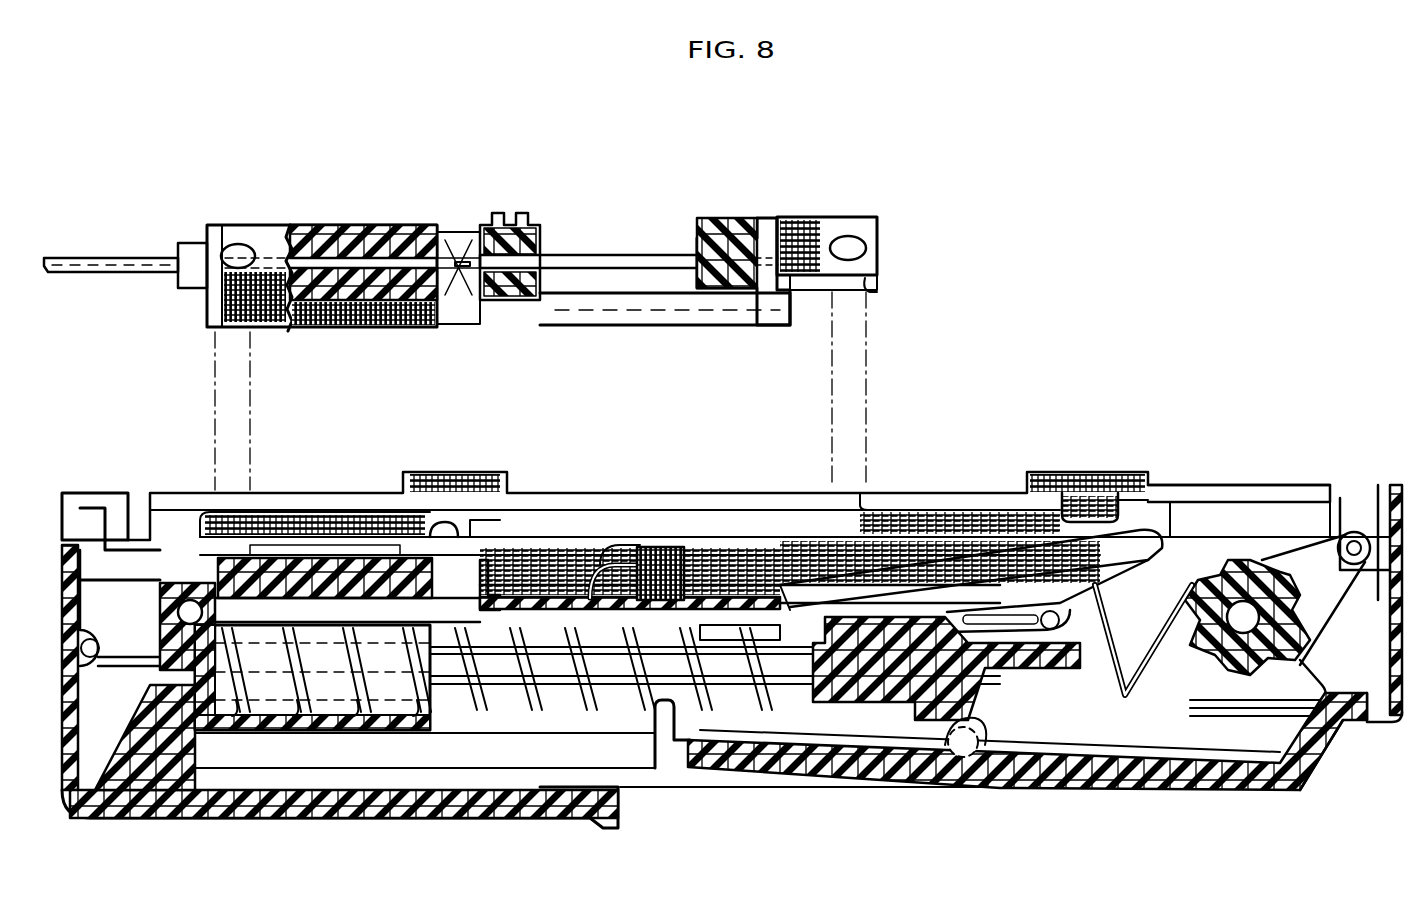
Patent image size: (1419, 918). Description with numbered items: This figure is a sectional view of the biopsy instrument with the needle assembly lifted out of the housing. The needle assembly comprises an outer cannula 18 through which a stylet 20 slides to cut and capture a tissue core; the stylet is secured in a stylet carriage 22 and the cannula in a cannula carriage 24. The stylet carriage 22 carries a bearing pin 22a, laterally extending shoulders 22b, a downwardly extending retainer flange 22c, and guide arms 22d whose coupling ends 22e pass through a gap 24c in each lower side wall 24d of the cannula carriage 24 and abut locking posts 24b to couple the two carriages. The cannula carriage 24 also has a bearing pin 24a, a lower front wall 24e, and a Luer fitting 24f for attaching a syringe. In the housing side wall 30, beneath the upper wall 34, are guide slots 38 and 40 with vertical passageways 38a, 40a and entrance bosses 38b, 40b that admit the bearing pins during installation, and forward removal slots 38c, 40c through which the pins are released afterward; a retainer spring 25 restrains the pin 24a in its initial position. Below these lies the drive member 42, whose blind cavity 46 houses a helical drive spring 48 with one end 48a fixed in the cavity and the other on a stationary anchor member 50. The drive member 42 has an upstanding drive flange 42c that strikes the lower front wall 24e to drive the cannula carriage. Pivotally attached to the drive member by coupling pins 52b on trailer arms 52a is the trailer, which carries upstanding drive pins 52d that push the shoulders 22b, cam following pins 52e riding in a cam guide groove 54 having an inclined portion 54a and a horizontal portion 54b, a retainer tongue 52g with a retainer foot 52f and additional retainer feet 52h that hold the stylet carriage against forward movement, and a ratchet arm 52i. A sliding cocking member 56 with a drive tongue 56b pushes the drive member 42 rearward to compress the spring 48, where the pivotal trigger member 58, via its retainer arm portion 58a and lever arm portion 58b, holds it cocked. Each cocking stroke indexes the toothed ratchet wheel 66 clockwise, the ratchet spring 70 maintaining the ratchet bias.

The outer cannula 18 is at (76, 256).
The stylet 20 is at (583, 254).
The stylet carriage 22 is at (785, 220).
The bearing pin 22a is at (855, 240).
The shoulders 22b is at (813, 228).
The retainer flange 22c is at (876, 292).
The stylet carriage guide arms 22d is at (645, 296).
The coupling ends 22e is at (482, 245).
The cannula carriage 24 is at (306, 222).
The bearing pin 24a is at (232, 246).
The locking posts 24b is at (470, 330).
The gap 24c is at (442, 280).
The lower side walls 24d is at (362, 300).
The lower front wall 24e is at (207, 302).
The Luer fitting 24f is at (512, 298).
The retainer spring 25 is at (360, 540).
The housing side wall 30 is at (1243, 465).
The upper wall 34 is at (1212, 492).
The guide slot 38 is at (1022, 505).
The vertical passageway 38a is at (1125, 500).
The entrance boss 38b is at (1110, 500).
The forward removal slot 38c is at (870, 500).
The guide slot 40 is at (330, 510).
The vertical passageway 40a is at (455, 493).
The entrance boss 40b is at (460, 515).
The forward removal slot 40c is at (238, 510).
The drive member 42 is at (150, 600).
The drive flange 42c is at (228, 560).
The blind cavity 46 is at (400, 735).
The helical drive spring 48 is at (345, 735).
The spring end 48a is at (255, 735).
The stationary anchor member 50 is at (865, 705).
The trailer arms 52a is at (492, 590).
The coupling pin 52b is at (185, 600).
The drive pins 52d is at (680, 600).
The cam following pin 52e is at (660, 545).
The retainer foot 52f is at (612, 570).
The retainer tongue 52g is at (555, 690).
The additional retainer feet 52h is at (555, 600).
The ratchet arm 52i is at (742, 600).
The cam guide groove 54 is at (940, 570).
The inclined portion 54a is at (1010, 610).
The horizontal portion 54b is at (800, 590).
The cocking member 56 is at (478, 800).
The drive tongue 56b is at (182, 740).
The trigger member 58 is at (980, 748).
The retainer arm portion 58a is at (665, 768).
The trigger lever arm portion 58b is at (1332, 748).
The ratchet wheel 66 is at (1258, 550).
The ratchet spring 70 is at (1158, 650).